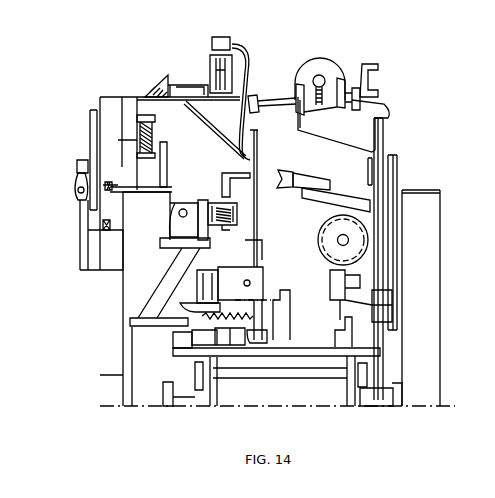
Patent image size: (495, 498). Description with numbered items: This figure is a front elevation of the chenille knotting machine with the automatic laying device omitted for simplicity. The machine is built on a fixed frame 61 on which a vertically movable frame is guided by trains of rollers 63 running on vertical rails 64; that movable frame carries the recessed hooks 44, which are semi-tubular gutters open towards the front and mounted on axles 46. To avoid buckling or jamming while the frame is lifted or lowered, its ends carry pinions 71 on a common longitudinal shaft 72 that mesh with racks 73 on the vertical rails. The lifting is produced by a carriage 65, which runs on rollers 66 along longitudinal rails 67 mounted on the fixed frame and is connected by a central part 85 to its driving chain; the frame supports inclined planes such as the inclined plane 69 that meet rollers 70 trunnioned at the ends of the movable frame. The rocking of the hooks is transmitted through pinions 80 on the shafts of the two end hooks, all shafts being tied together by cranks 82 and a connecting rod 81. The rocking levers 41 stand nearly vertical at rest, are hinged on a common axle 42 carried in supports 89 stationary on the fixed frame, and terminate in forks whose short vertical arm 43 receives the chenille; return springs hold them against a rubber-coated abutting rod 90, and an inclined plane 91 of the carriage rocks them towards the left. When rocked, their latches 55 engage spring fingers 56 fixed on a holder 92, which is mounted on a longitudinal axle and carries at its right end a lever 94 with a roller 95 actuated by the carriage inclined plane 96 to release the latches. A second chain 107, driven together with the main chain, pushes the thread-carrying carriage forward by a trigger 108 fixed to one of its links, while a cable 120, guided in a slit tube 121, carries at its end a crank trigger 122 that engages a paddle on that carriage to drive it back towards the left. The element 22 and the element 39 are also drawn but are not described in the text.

The shaft column 22 is at (355, 130).
The head assembly 39 is at (320, 70).
The lever 41 is at (256, 207).
The axle 42 is at (247, 280).
The fork arm 43 is at (257, 148).
The recessed hook 44 is at (253, 95).
The axle 46 is at (322, 75).
The latch 55 is at (234, 178).
The spring finger 56 is at (216, 205).
The fixed frame 61 is at (133, 302).
The roller 63 is at (392, 298).
The vertical rail 64 is at (403, 240).
The carriage 65 is at (272, 356).
The roller 66 is at (362, 378).
The longitudinal rail 67 is at (182, 397).
The inclined plane 69 is at (353, 322).
The roller 70 is at (392, 312).
The pinion 71 is at (348, 237).
The longitudinal shaft 72 is at (392, 218).
The rack 73 is at (368, 225).
The pinion 80 is at (305, 72).
The connecting rod 81 is at (370, 65).
The crank 82 is at (355, 85).
The central part 85 is at (290, 298).
The support 89 is at (262, 275).
The abutting rod 90 is at (282, 175).
The inclined plane 91 is at (240, 333).
The holder 92 is at (177, 255).
The lever 94 is at (142, 337).
The roller 95 is at (233, 322).
The inclined plane 96 is at (232, 337).
The chain 107 is at (103, 200).
The trigger 108 is at (124, 185).
The cable 120 is at (84, 200).
The tube 121 is at (78, 192).
The crank trigger 122 is at (86, 160).